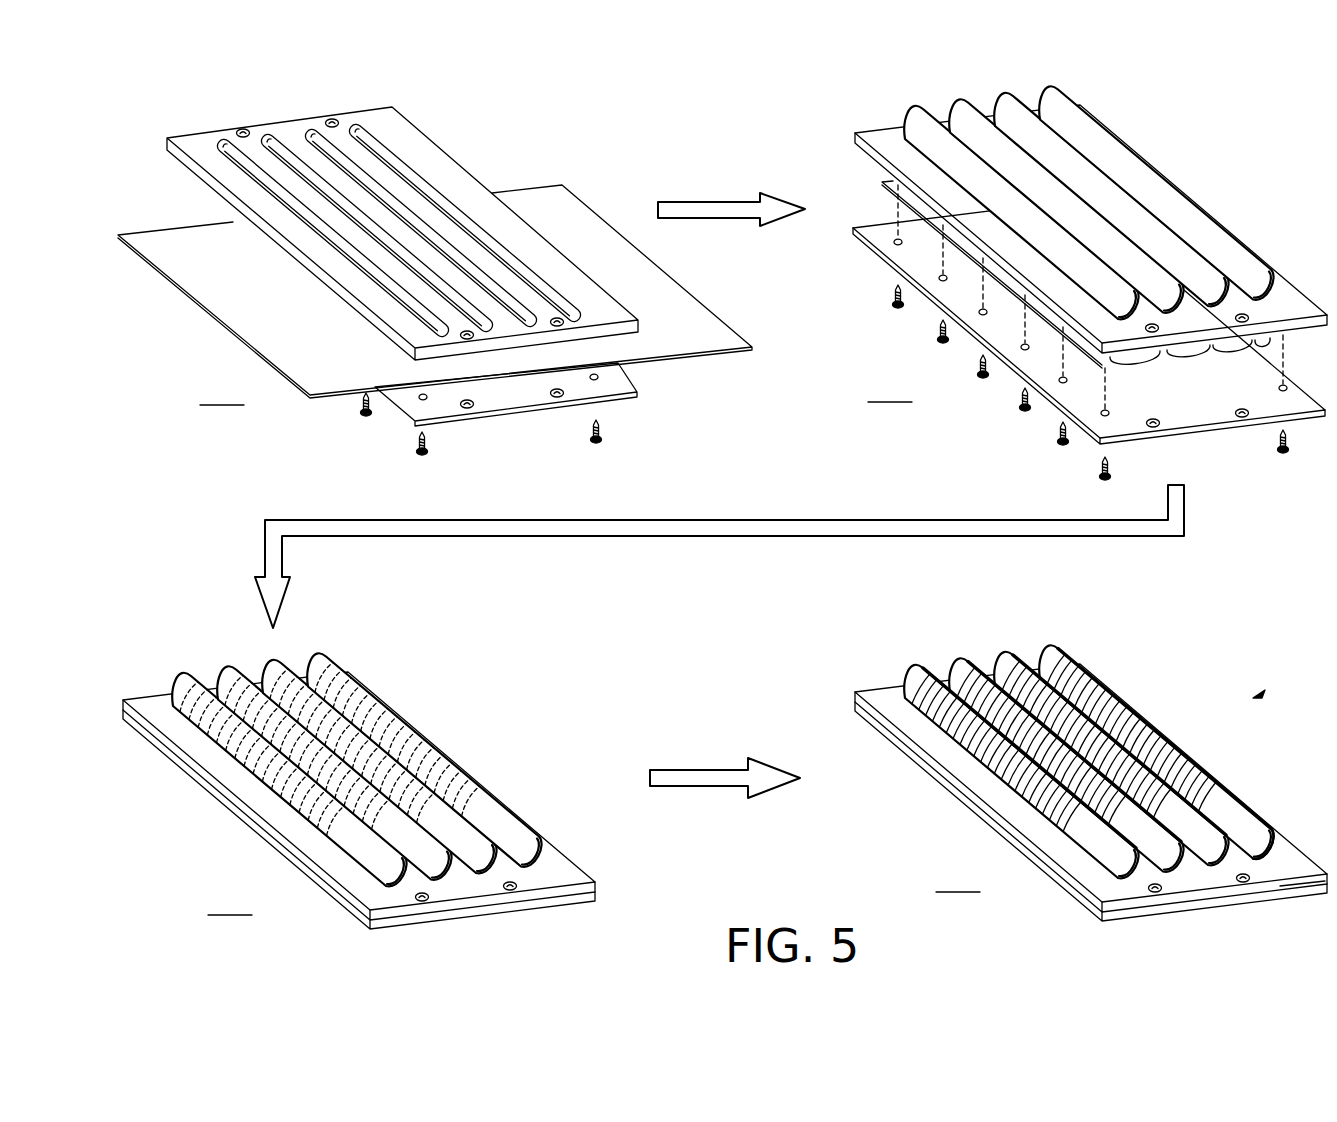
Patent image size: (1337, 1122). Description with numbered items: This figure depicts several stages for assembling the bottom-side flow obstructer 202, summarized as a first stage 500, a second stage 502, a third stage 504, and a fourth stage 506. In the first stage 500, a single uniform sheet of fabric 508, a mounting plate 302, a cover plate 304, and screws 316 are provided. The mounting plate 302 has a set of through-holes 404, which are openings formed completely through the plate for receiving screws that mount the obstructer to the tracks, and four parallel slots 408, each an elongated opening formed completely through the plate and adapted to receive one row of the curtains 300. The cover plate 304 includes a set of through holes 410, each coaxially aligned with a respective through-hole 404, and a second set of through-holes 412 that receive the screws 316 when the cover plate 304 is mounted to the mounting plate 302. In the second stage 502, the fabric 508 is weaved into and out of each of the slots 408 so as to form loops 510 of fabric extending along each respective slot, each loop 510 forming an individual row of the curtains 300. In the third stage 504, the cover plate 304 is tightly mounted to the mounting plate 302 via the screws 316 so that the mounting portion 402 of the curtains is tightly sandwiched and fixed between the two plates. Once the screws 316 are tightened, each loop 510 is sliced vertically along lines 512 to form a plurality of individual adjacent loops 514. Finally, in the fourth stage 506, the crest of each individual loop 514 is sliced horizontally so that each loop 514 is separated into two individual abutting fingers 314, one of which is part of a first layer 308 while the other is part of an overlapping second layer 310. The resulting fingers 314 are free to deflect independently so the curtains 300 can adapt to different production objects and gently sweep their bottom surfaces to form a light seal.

The bottom-side flow obstructer 202 is at (1260, 695).
The curtains 300 is at (1060, 663).
The mounting plate 302 is at (443, 175).
The cover plate 304 is at (508, 412).
The first layer 308 is at (1282, 884).
The second layer 310 is at (1265, 850).
The fingers 314 is at (992, 772).
The screws 316 is at (418, 458).
The mounting portion 402 is at (1100, 370).
The through-holes 404 is at (328, 121).
The slots 408 is at (537, 283).
The through holes 410 is at (551, 393).
The through-holes 412 is at (420, 395).
The first stage 500 is at (502, 299).
The second stage 502 is at (719, 502).
The third stage 504 is at (504, 836).
The fourth stage 506 is at (958, 879).
The fabric 508 is at (668, 292).
The loops 510 is at (1158, 205).
The lines 512 is at (356, 707).
The individual adjacent loops 514 is at (275, 800).